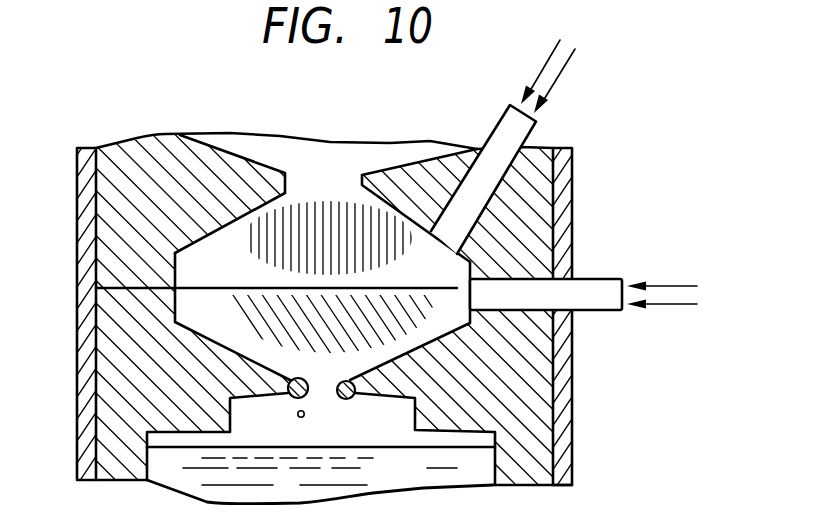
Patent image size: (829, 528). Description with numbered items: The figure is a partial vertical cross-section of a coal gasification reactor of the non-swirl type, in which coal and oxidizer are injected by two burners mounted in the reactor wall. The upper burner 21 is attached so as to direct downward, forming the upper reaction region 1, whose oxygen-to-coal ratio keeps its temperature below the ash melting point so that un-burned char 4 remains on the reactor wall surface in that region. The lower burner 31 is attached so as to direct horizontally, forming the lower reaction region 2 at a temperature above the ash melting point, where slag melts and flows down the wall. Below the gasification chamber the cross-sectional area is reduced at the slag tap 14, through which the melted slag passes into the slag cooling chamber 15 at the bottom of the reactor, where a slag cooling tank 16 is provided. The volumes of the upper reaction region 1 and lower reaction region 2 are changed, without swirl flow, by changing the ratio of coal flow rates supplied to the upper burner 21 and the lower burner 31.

The upper reaction region 1 is at (313, 249).
The lower reaction region 2 is at (313, 336).
The un-burned char 4 is at (302, 192).
The slag tap 14 is at (333, 387).
The slag cooling chamber 15 is at (315, 435).
The slag cooling tank 16 is at (380, 479).
The upper burner 21 is at (496, 126).
The lower burner 31 is at (602, 278).